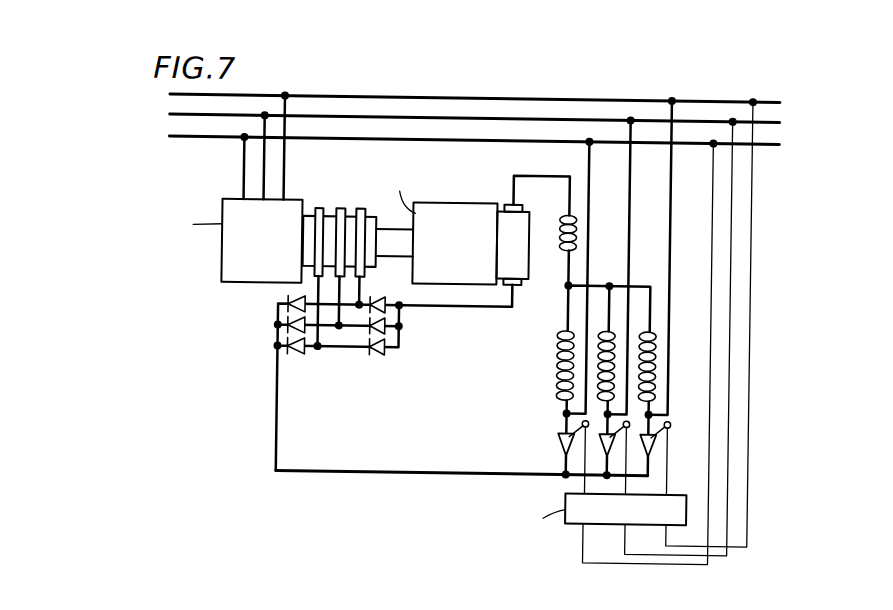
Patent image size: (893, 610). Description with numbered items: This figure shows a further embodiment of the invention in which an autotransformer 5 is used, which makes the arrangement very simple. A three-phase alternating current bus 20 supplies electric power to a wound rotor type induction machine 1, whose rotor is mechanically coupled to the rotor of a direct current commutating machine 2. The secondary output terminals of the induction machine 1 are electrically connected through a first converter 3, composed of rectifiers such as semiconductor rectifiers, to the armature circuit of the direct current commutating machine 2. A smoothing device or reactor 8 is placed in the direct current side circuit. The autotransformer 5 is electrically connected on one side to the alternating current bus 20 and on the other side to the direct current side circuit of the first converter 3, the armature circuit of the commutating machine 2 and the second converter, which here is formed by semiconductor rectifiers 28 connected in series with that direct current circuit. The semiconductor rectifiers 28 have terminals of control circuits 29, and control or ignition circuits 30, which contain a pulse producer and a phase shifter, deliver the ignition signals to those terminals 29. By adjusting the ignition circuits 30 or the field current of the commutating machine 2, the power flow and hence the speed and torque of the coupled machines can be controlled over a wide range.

The alternating current bus 20 is at (400, 137).
The wound rotor type induction machine 1 is at (228, 186).
The direct current commutating machine 2 is at (434, 216).
The first converter 3 is at (403, 329).
The smoothing device or reactor 8 is at (562, 222).
The autotransformer 5 is at (561, 353).
The semiconductor rectifiers 28 is at (567, 432).
The terminals of control circuits 29 is at (676, 420).
The control (ignition) circuits 30 is at (516, 329).